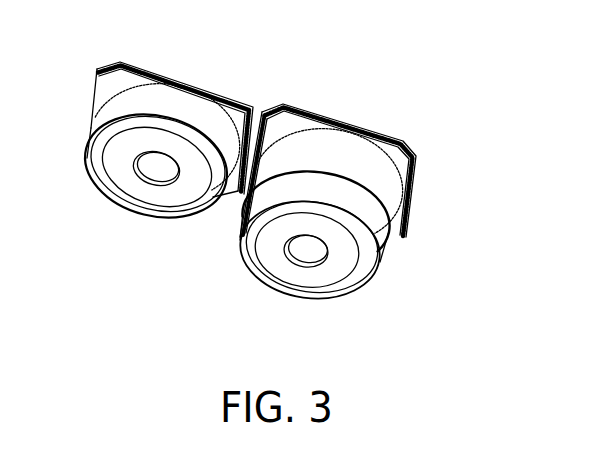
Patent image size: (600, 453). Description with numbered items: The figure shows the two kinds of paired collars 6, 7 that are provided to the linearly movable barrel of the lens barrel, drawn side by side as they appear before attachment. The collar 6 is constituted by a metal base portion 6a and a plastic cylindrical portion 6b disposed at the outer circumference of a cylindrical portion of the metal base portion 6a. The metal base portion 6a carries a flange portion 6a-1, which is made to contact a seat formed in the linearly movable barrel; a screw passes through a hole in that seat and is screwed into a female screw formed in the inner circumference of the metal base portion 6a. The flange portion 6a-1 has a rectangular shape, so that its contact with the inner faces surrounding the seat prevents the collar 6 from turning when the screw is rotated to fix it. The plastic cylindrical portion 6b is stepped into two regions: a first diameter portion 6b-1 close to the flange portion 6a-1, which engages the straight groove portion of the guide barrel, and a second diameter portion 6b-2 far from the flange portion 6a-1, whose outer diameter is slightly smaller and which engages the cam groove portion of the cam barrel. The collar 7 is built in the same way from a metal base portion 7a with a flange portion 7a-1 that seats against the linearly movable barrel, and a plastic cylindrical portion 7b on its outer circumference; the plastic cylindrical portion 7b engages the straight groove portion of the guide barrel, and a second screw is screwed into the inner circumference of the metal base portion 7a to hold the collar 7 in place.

The collar 6 is at (388, 201).
The metal base portion 6a is at (361, 132).
The flange portion 6a-1 is at (323, 120).
The plastic cylindrical portion 6b is at (388, 228).
The first diameter portion 6b-1 is at (393, 193).
The second diameter portion 6b-2 is at (373, 240).
The collar 7 is at (158, 171).
The metal base portion 7a is at (187, 164).
The flange portion 7a-1 is at (205, 84).
The plastic cylindrical portion 7b is at (112, 110).